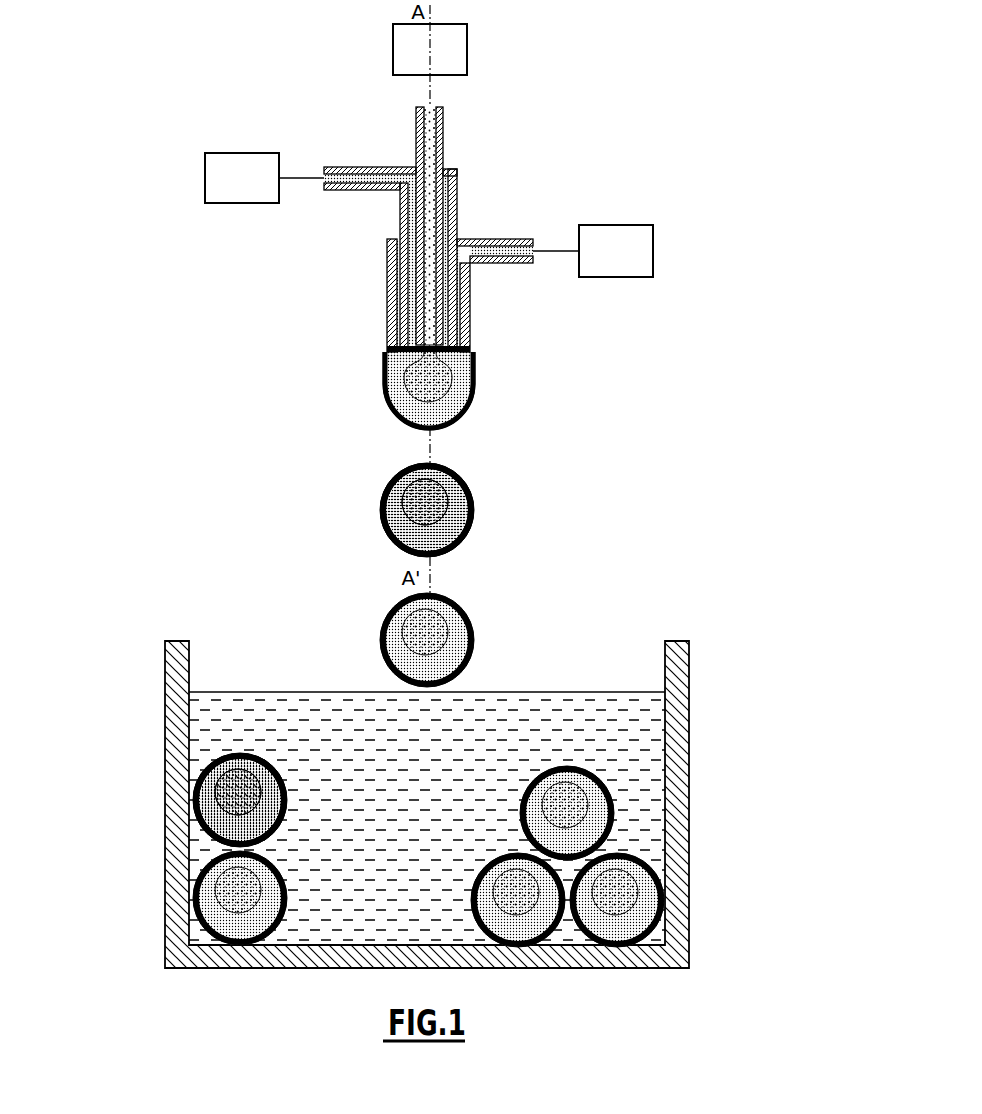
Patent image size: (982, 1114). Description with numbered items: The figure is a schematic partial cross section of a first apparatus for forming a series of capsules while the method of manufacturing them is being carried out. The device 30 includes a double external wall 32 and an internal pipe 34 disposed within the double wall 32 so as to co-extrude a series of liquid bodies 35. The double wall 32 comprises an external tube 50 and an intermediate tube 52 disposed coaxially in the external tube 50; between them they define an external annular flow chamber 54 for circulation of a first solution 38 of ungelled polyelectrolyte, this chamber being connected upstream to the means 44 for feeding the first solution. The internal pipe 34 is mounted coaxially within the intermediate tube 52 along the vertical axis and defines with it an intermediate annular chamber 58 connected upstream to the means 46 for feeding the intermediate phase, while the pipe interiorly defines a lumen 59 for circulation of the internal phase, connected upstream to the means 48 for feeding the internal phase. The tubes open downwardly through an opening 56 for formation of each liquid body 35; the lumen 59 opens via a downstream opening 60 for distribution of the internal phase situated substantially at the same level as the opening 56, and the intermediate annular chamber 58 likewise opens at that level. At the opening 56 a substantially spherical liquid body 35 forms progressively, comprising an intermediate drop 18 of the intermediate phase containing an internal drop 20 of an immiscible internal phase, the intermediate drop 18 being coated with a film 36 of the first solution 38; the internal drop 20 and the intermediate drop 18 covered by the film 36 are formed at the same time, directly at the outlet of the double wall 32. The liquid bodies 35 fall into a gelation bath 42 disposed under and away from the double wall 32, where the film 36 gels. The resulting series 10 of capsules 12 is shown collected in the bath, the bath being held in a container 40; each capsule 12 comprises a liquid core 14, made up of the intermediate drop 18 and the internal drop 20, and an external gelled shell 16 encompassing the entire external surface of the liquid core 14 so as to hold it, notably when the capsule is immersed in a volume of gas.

The series of capsules 10 is at (240, 678).
The capsule 12 is at (262, 748).
The liquid core 14 is at (220, 820).
The external gelled shell 16 is at (292, 783).
The intermediate drop 18 is at (400, 532).
The internal macroscopic drop 20 is at (404, 506).
The device 30 is at (560, 100).
The double external wall 32 is at (380, 325).
The internal pipe 34 is at (443, 128).
The liquid body 35 is at (485, 505).
The film 36 is at (473, 388).
The first solution 38 is at (425, 402).
The container 40 is at (160, 683).
The gelation bath 42 is at (588, 688).
The means for feeding the first solution 44 is at (617, 228).
The means for feeding the intermediate phase 46 is at (240, 155).
The means for feeding the internal phase 48 is at (393, 50).
The external tube 50 is at (470, 308).
The intermediate tube 52 is at (470, 333).
The external annular flow chamber 54 is at (470, 283).
The opening 56 is at (428, 355).
The intermediate annular chamber 58 is at (457, 202).
The lumen 59 is at (416, 140).
The downstream opening 60 is at (400, 408).